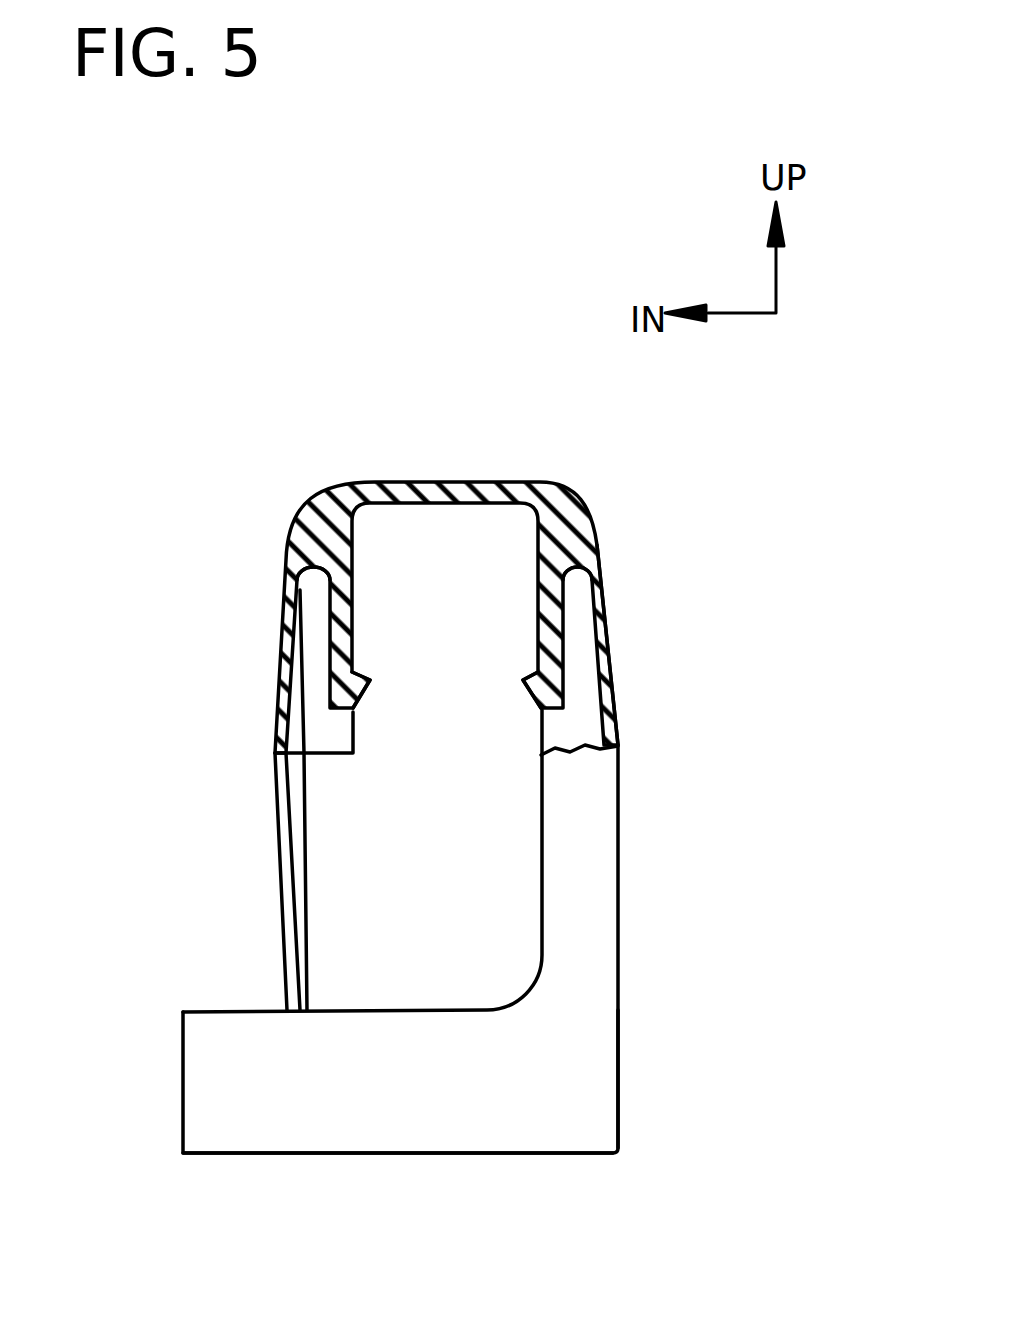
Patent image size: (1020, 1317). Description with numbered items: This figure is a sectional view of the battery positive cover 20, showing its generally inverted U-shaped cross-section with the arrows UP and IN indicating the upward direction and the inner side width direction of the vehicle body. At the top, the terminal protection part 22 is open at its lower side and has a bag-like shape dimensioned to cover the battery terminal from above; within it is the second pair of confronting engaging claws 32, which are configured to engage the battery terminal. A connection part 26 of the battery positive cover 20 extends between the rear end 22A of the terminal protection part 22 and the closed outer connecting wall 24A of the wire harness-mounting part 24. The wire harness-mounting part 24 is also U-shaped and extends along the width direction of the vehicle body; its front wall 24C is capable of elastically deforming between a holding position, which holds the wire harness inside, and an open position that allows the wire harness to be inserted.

The battery positive cover 20 is at (808, 597).
The terminal protection part 22 is at (543, 615).
The rear end of the terminal protection part 22A is at (650, 639).
The wire harness-mounting part 24 is at (502, 991).
The closed outer connecting wall 24A is at (609, 1074).
The front wall 24C is at (534, 1175).
The connection part 26 is at (497, 789).
The second pair of confronting engaging claws 32 is at (364, 688).